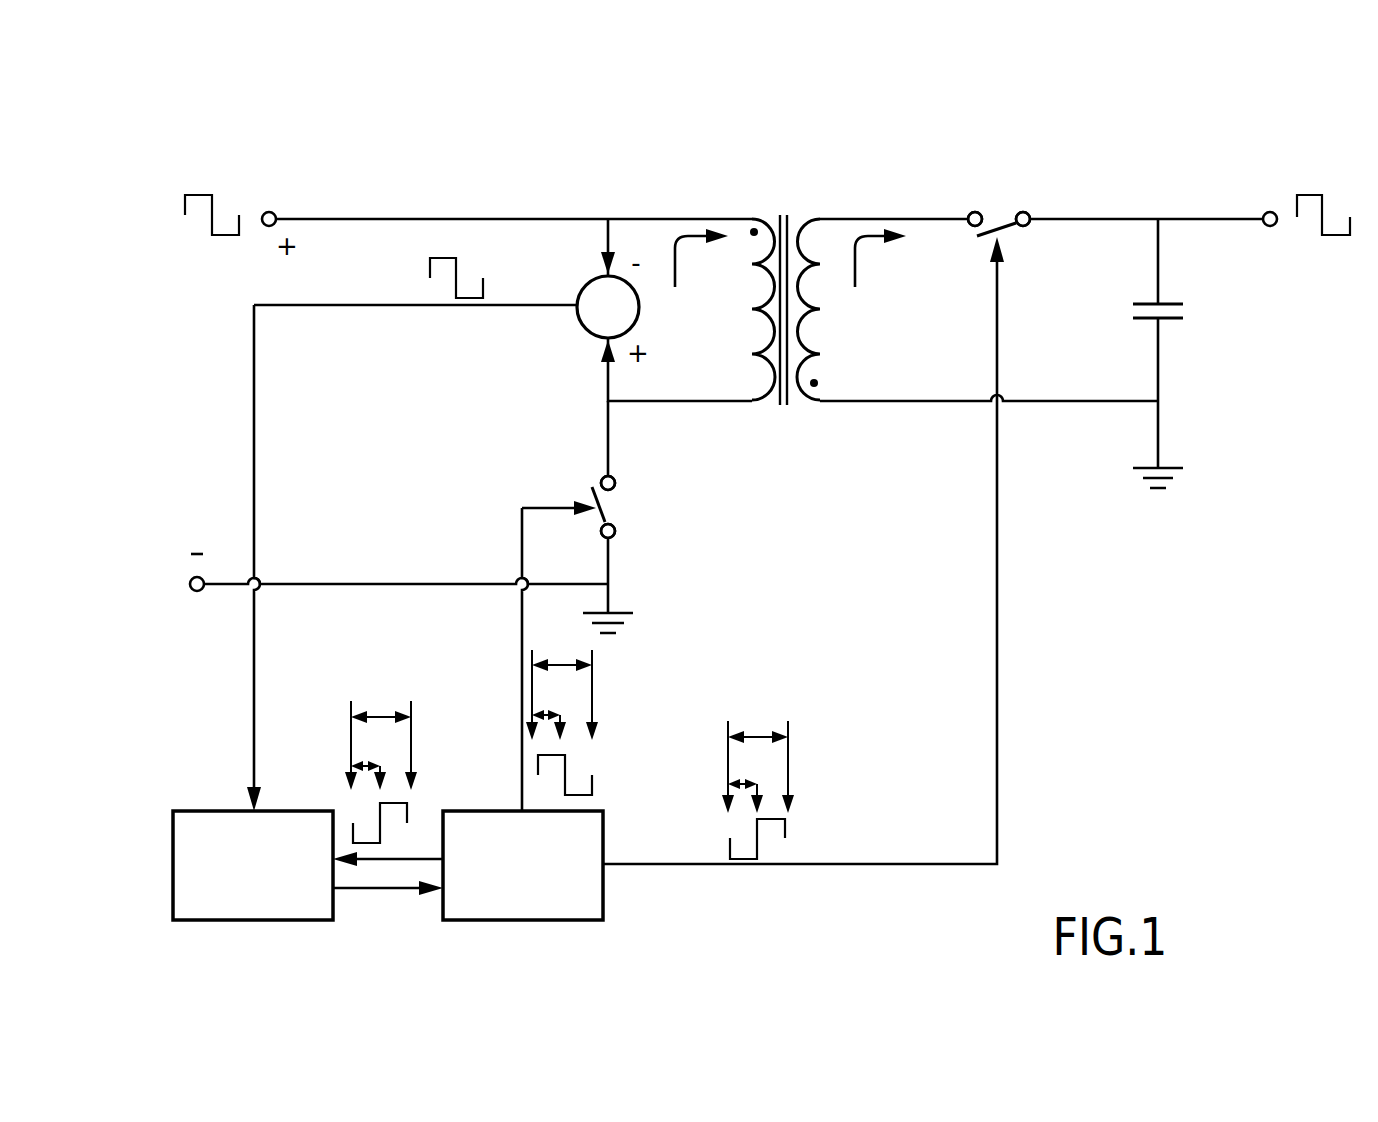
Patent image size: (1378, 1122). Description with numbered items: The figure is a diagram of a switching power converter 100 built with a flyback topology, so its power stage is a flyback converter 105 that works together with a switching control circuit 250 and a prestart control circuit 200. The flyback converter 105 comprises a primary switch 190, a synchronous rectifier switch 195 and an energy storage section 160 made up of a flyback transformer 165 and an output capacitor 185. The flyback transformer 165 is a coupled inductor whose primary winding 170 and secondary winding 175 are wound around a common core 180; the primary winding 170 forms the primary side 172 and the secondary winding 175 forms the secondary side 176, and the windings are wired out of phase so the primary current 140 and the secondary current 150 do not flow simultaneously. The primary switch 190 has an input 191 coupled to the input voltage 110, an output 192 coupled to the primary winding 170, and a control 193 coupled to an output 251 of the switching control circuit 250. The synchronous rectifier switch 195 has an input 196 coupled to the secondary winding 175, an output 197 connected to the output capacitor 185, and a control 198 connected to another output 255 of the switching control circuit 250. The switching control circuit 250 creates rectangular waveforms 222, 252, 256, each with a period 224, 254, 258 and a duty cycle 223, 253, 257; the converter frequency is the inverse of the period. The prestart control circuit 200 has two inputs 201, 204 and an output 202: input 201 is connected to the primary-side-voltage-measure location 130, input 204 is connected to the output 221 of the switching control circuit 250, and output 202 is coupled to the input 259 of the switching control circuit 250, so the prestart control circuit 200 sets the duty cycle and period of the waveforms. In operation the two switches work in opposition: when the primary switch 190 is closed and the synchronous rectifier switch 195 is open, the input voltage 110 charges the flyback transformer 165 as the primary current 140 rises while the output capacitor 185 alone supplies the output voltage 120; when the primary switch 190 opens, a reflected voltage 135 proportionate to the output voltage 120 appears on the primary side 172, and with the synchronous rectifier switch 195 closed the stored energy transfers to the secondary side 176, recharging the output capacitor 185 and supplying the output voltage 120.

The switching power converter 100 is at (1290, 355).
The flyback converter 105 is at (606, 148).
The input voltage 110 is at (190, 194).
The output voltage 120 is at (1322, 194).
The primary-side-voltage-measure location 130 is at (580, 326).
The reflected voltage 135 is at (430, 262).
The primary current 140 is at (675, 287).
The secondary current 150 is at (855, 287).
The energy storage section 160 is at (1215, 170).
The flyback transformer 165 is at (786, 190).
The primary winding 170 is at (757, 403).
The primary side 172 is at (688, 186).
The secondary winding 175 is at (815, 403).
The secondary side 176 is at (876, 186).
The common core 180 is at (793, 405).
The output capacitor 185 is at (1183, 318).
The primary switch 190 is at (700, 517).
The input of primary switch 191 is at (615, 537).
The output of primary switch 192 is at (616, 483).
The control of primary switch 193 is at (590, 490).
The synchronous rectifier switch 195 is at (1012, 175).
The input of synchronous rectifier switch 196 is at (975, 211).
The output of synchronous rectifier switch 197 is at (1030, 212).
The control of synchronous rectifier switch 198 is at (1012, 227).
The prestart control circuit 200 is at (258, 922).
The input of prestart control circuit 201 is at (250, 808).
The output of prestart control circuit 202 is at (338, 888).
The input of prestart control circuit 204 is at (344, 866).
The output of switching control circuit 221 is at (441, 858).
The waveform 222 is at (377, 822).
The duty cycle 223 is at (373, 765).
The period 224 is at (382, 716).
The switching control circuit 250 is at (533, 922).
The output of switching control circuit 251 is at (520, 808).
The waveform 252 is at (598, 776).
The duty cycle 253 is at (556, 714).
The period 254 is at (562, 664).
The output of switching control circuit 255 is at (607, 868).
The waveform 256 is at (788, 822).
The duty cycle 257 is at (745, 783).
The period 258 is at (757, 736).
The input of switching control circuit 259 is at (440, 895).